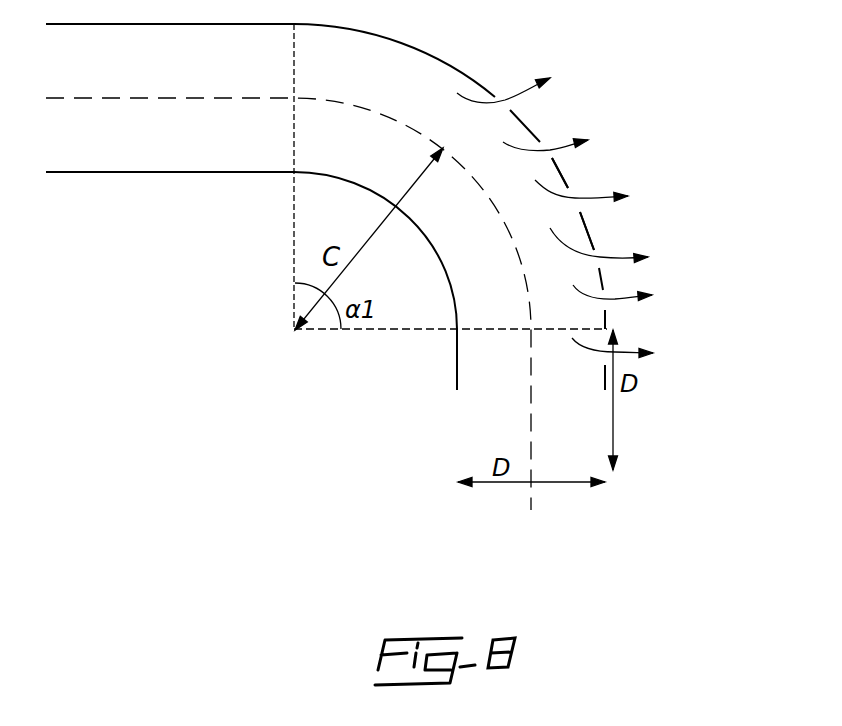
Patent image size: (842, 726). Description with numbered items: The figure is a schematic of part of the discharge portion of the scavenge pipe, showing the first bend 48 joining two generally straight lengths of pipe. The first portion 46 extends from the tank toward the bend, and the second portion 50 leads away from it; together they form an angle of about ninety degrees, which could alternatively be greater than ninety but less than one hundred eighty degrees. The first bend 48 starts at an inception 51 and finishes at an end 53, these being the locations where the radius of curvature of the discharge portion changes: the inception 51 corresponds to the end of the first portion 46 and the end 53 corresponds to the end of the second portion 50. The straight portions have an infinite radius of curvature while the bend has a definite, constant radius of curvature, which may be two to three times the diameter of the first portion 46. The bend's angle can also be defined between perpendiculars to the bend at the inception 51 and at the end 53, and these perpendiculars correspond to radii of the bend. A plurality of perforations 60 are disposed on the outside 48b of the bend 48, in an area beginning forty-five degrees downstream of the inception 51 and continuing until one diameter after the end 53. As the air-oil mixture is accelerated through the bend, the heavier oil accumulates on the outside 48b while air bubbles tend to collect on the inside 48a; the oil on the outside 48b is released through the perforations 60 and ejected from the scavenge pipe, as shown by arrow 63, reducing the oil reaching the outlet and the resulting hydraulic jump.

The first portion 46 is at (143, 172).
The first bend 48 is at (528, 117).
The inside of the bend 48a is at (445, 277).
The outside of the bend 48b is at (565, 175).
The second portion 50 is at (457, 378).
The inception 51 is at (277, 176).
The end 53 is at (450, 348).
The perforations 60 is at (559, 135).
The arrow 63 is at (599, 195).